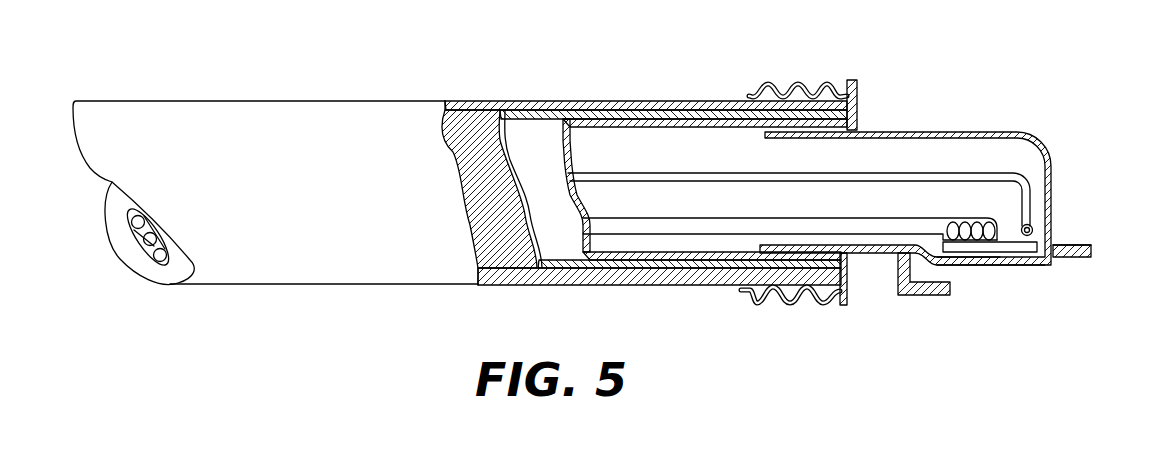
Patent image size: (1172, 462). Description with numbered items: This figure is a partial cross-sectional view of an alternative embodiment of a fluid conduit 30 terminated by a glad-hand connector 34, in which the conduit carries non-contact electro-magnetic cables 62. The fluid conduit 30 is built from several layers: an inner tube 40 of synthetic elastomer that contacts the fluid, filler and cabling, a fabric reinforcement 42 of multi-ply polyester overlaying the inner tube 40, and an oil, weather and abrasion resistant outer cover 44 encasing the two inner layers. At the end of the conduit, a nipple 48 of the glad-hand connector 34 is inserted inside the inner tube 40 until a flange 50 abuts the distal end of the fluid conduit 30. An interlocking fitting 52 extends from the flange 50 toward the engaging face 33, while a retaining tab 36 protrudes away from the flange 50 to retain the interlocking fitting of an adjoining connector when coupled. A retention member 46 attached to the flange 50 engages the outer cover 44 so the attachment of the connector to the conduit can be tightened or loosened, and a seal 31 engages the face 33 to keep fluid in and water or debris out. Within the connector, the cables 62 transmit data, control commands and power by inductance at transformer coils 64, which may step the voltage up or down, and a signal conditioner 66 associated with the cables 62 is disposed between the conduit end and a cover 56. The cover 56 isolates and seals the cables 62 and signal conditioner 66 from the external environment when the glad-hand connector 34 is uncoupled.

The fluid conduit 30 is at (277, 89).
The seal 31 is at (962, 266).
The engaging face 33 is at (1038, 264).
The glad-hand connector 34 is at (1043, 106).
The retaining tab 36 is at (1079, 265).
The inner tube 40 is at (537, 130).
The fabric reinforcement 42 is at (473, 118).
The outer cover 44 is at (395, 118).
The retention member 46 is at (805, 302).
The nipple 48 is at (775, 144).
The flange 50 is at (867, 113).
The interlocking fitting 52 is at (935, 303).
The cover 56 is at (1023, 269).
The non-contact electro-magnetic cable 62 is at (1035, 179).
The transformer coil 64 is at (1036, 230).
The signal conditioner 66 is at (1065, 248).